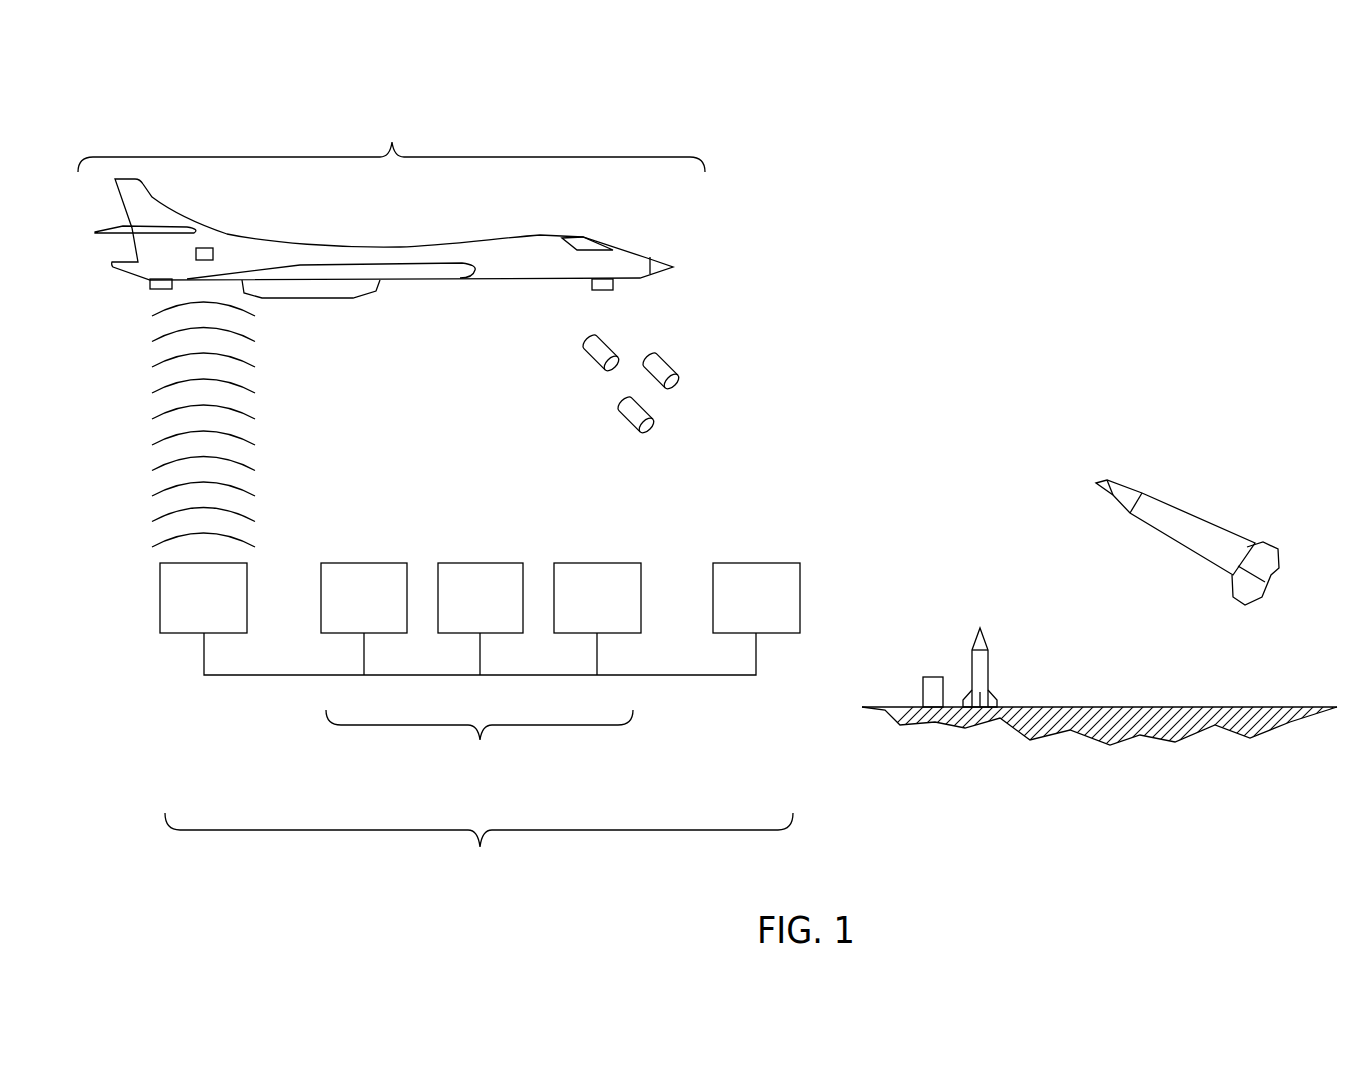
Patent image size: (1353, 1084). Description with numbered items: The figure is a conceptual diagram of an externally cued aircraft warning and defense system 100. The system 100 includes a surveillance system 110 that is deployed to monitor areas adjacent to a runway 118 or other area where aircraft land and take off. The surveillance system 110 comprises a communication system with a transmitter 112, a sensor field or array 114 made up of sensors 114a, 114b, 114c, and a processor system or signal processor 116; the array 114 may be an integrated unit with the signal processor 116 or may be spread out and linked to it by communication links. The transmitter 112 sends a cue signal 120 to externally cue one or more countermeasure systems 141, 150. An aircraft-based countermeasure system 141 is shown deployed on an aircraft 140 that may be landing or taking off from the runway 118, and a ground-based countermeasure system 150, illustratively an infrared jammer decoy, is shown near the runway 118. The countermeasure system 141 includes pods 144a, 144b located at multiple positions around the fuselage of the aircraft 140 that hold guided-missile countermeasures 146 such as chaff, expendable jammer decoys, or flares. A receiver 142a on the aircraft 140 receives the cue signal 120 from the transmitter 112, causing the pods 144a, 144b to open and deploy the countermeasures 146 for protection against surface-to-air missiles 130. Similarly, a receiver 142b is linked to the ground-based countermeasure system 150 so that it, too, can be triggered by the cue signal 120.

The externally cued aircraft warning and defense system 100 is at (989, 397).
The surveillance system 110 is at (480, 720).
The transmitter 112 is at (186, 610).
The sensor array 114 is at (481, 667).
The sensor 114a is at (339, 610).
The sensor 114b is at (455, 610).
The sensor 114c is at (572, 610).
The signal processor 116 is at (738, 610).
The runway 118 is at (1084, 706).
The cue signal 120 is at (140, 308).
The surface-to-air missile 130 is at (1208, 528).
The aircraft 140 is at (120, 197).
The aircraft-based countermeasure system 141 is at (391, 142).
The receiver 142a is at (204, 248).
The receiver 142b is at (932, 677).
The pod 144a is at (613, 285).
The pod 144b is at (150, 284).
The guided-missile countermeasures 146 is at (596, 360).
The ground-based countermeasure system 150 is at (988, 643).